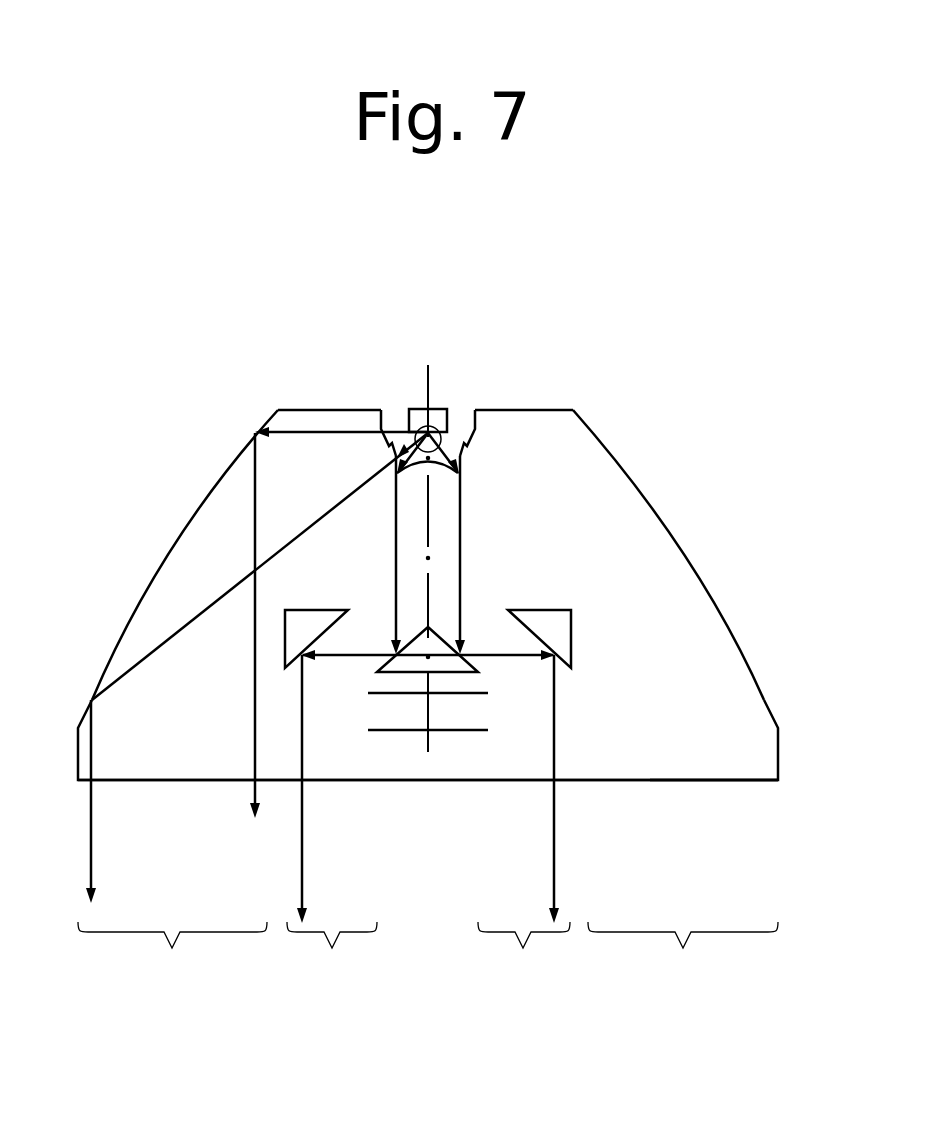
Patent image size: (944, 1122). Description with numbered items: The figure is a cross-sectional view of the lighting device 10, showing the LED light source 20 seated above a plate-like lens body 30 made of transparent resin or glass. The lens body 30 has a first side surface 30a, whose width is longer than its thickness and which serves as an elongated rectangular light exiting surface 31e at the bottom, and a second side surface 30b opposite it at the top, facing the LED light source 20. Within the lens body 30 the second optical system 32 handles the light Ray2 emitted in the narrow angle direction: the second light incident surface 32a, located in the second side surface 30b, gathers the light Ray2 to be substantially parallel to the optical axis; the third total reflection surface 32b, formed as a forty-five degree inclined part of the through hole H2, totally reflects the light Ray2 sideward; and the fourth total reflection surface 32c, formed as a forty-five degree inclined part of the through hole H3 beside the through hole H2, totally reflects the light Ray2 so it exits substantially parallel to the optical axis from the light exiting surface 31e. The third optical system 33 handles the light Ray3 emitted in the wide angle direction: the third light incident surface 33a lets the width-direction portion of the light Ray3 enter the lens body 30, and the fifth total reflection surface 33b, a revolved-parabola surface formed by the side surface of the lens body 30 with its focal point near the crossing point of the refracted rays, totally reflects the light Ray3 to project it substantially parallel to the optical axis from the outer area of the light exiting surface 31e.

The lighting device 10 is at (439, 264).
The LED light source 20 is at (422, 412).
The lens body 30 is at (727, 620).
The first side surface 30a is at (494, 783).
The second side surface 30b is at (573, 409).
The light exiting surface 31e is at (720, 783).
The second optical system 32 is at (390, 514).
The second light incident surface 32a is at (440, 463).
The third total reflection surface 32b is at (412, 640).
The fourth total reflection surface 32c is at (332, 620).
The third optical system 33 is at (204, 426).
The third light incident surface 33a is at (385, 424).
The fifth total reflection surface 33b is at (204, 520).
The through hole H2 is at (458, 667).
The through hole H3 is at (290, 648).
The light Ray2 is at (443, 468).
The light Ray3 is at (350, 494).